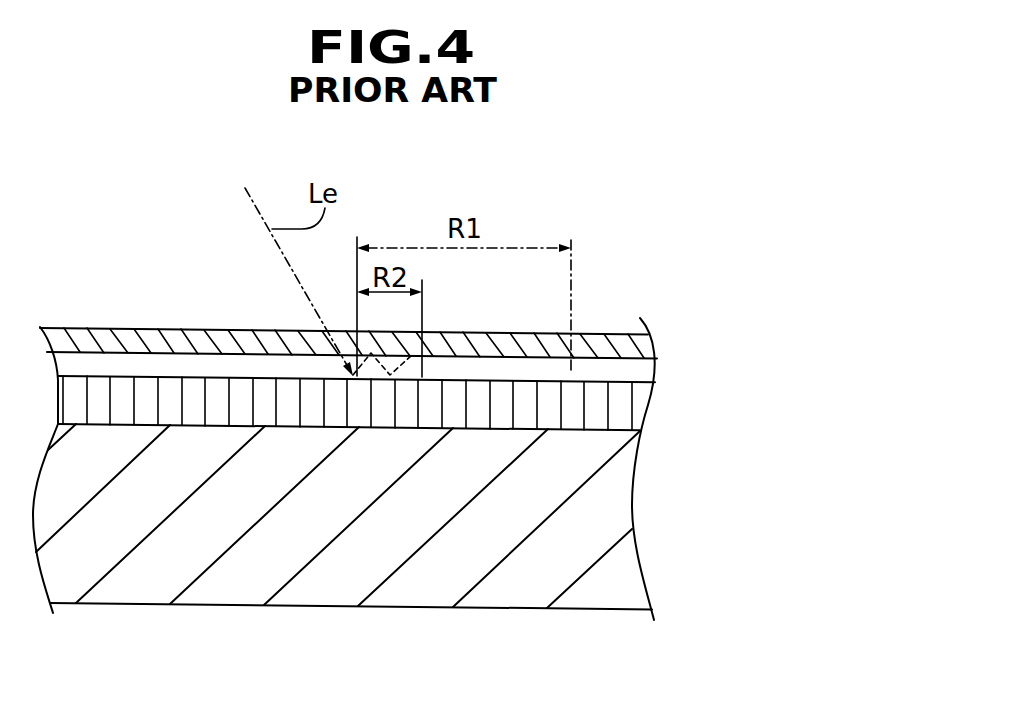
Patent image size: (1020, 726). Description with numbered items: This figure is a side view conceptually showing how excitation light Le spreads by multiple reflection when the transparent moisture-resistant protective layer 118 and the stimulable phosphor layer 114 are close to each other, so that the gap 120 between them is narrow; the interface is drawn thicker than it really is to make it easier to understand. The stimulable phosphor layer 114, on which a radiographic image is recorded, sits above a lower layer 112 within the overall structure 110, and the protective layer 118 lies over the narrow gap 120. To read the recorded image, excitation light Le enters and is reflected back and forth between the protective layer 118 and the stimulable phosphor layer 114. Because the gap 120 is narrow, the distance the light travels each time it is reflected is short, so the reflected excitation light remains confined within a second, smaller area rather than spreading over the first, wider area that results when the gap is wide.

The optical information recording medium (prior art) 110 is at (629, 212).
The substrate 112 is at (613, 505).
The stimulable phosphor layer 114 is at (637, 405).
The transparent moisture-resistant protective layer 118 is at (640, 325).
The gap 120 is at (645, 368).